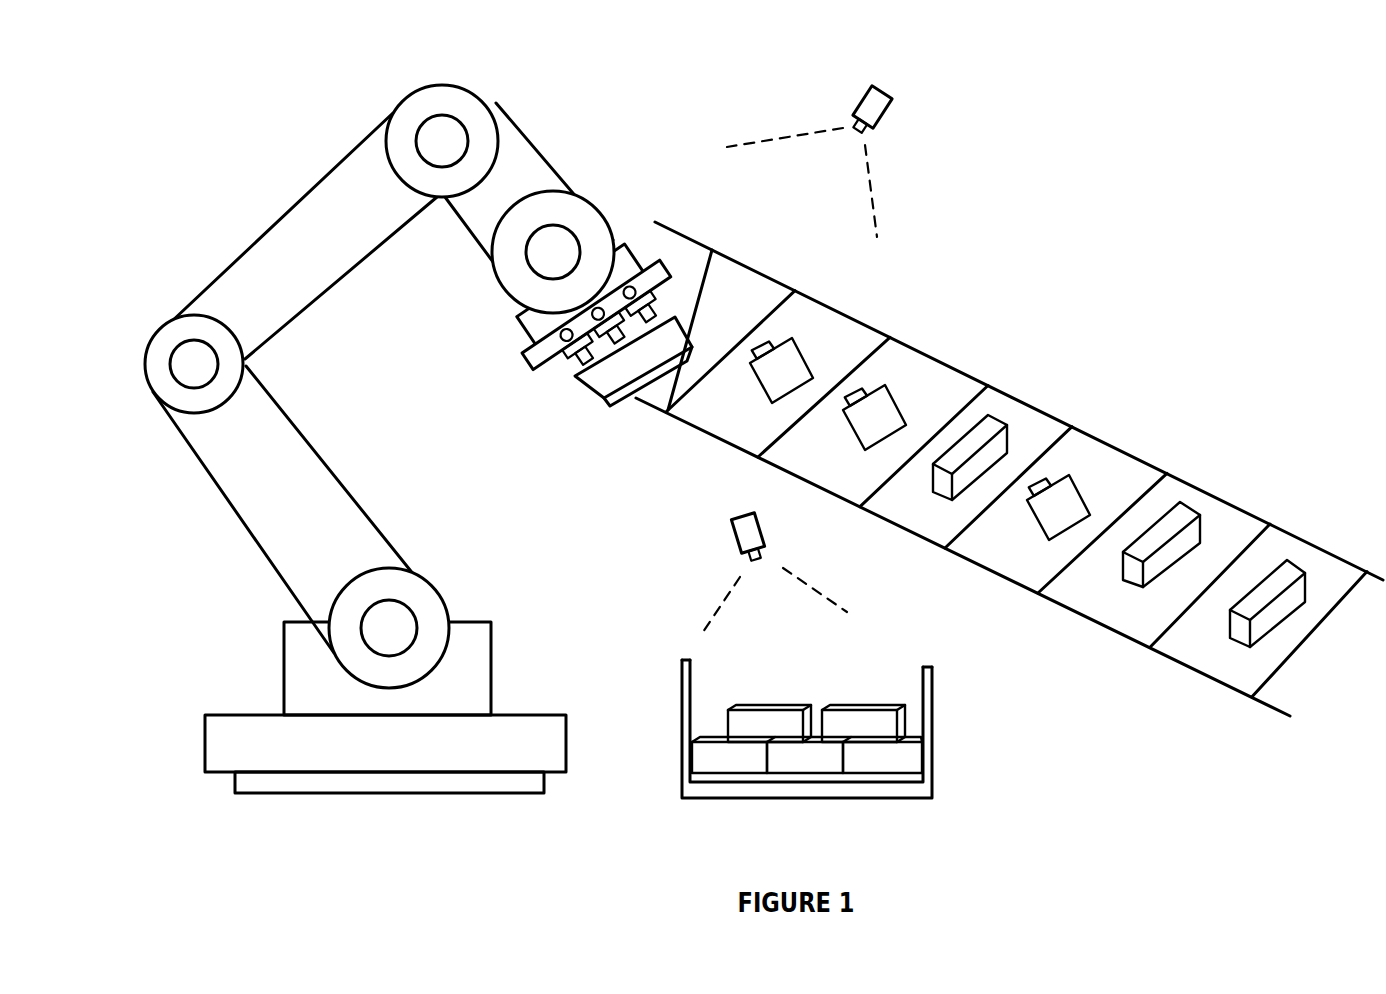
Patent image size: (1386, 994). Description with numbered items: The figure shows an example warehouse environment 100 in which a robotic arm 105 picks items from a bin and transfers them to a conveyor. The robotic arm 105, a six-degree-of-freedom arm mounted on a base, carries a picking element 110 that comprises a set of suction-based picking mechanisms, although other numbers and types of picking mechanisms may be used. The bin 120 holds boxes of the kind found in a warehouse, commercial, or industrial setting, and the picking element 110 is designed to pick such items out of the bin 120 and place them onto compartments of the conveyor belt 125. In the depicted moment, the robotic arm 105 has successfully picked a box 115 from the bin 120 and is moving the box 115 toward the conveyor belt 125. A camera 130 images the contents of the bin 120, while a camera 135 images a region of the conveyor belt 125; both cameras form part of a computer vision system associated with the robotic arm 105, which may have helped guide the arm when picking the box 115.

The warehouse environment 100 is at (736, 438).
The robotic arm 105 is at (131, 366).
The picking element 110 is at (510, 359).
The box 115 is at (625, 422).
The bin 120 is at (666, 786).
The conveyor belt 125 is at (1312, 712).
The camera 130 is at (724, 504).
The camera 135 is at (868, 73).